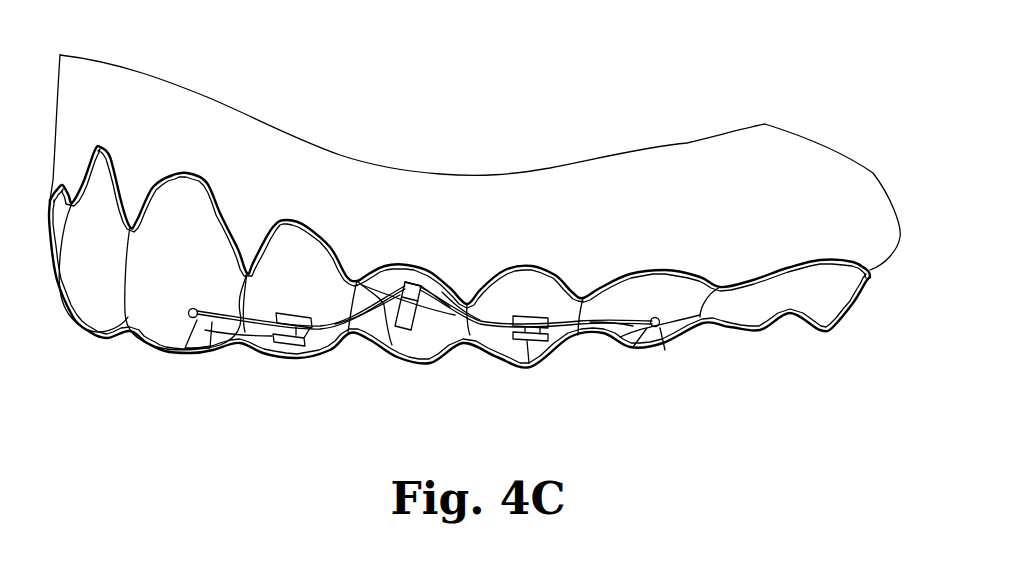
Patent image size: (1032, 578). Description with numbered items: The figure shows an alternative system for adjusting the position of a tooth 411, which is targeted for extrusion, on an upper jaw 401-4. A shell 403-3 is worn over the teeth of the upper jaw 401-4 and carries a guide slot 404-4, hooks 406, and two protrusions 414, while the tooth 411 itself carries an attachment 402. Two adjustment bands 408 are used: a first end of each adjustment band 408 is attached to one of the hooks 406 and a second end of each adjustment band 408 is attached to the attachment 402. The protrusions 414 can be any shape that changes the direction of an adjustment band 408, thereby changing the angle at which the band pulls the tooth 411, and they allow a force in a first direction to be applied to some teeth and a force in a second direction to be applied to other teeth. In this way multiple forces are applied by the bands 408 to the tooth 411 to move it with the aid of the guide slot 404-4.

The upper jaw 401-4 is at (843, 151).
The attachment 402 is at (417, 283).
The shell 403-3 is at (813, 337).
The guide slot 404-4 is at (402, 330).
The hooks 406 is at (197, 320).
The adjustment bands 408 is at (442, 292).
The tooth 411 is at (433, 290).
The protrusions 414 is at (297, 360).